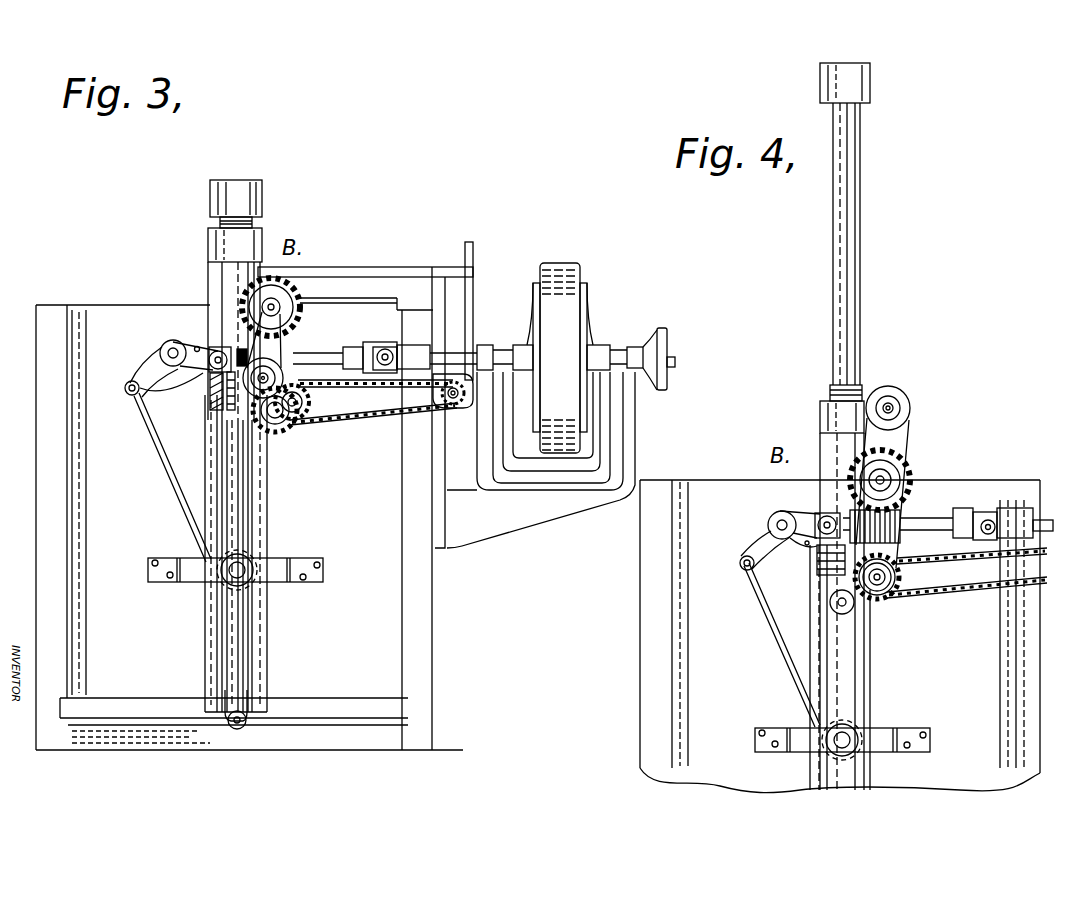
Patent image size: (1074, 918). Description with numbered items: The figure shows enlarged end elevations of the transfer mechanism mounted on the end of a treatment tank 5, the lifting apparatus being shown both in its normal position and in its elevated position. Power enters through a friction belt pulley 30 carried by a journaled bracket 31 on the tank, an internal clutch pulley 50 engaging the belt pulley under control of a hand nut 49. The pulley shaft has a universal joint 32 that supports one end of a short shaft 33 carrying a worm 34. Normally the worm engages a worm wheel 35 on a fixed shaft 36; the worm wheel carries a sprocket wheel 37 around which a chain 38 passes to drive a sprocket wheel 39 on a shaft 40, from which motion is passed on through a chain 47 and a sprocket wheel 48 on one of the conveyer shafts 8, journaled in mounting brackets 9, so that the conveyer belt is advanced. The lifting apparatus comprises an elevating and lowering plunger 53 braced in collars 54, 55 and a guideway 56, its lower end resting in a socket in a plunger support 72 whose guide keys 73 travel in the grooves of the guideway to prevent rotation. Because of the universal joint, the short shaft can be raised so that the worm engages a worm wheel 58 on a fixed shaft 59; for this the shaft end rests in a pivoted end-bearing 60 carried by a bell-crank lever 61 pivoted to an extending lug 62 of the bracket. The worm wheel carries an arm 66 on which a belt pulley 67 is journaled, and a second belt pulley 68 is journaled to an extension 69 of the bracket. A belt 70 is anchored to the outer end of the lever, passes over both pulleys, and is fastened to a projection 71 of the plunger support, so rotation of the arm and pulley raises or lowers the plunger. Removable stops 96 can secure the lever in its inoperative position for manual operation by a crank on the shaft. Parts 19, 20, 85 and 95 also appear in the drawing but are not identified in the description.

In FIG. 3, the tank 5 is at (56, 305).
In FIG. 4, the tank 5 is at (664, 487).
In FIG. 3, the shaft 8 is at (425, 269).
In FIG. 3, the mounting bracket 9 is at (360, 308).
In FIG. 3, the guide block 19 is at (216, 402).
In FIG. 4, the drive shaft 20 is at (935, 519).
In FIG. 3, the friction belt pulley 30 is at (562, 270).
In FIG. 3, the journaled bracket 31 is at (533, 512).
In FIG. 3, the universal joint 32 is at (376, 342).
In FIG. 4, the universal joint 32 is at (995, 510).
In FIG. 3, the short shaft 33 is at (330, 357).
In FIG. 3, the worm 34 is at (318, 352).
In FIG. 4, the worm 34 is at (898, 517).
In FIG. 3, the worm wheel 35 is at (304, 404).
In FIG. 4, the worm wheel 35 is at (940, 576).
In FIG. 3, the fixed shaft 36 is at (288, 427).
In FIG. 4, the fixed shaft 36 is at (898, 597).
In FIG. 3, the sprocket wheel 37 is at (294, 416).
In FIG. 4, the sprocket wheel 37 is at (906, 571).
In FIG. 3, the chain 38 is at (378, 419).
In FIG. 4, the chain 38 is at (967, 585).
In FIG. 3, the sprocket wheel 39 is at (432, 404).
In FIG. 3, the shaft 40 is at (454, 408).
In FIG. 3, the chain 47 is at (473, 313).
In FIG. 3, the sprocket wheel 48 is at (473, 258).
In FIG. 3, the hand nut 49 is at (670, 345).
In FIG. 3, the internal clutch pulley 50 is at (590, 290).
In FIG. 3, the elevating and lowering plunger 53 is at (238, 272).
In FIG. 4, the elevating and lowering plunger 53 is at (854, 207).
In FIG. 3, the collar 54 is at (208, 240).
In FIG. 4, the collar 54 is at (820, 416).
In FIG. 3, the collar 55 is at (152, 445).
In FIG. 3, the guideway 56 is at (212, 483).
In FIG. 4, the guideway 56 is at (816, 623).
In FIG. 3, the worm wheel 58 is at (276, 303).
In FIG. 4, the worm wheel 58 is at (905, 463).
In FIG. 3, the fixed shaft 59 is at (272, 362).
In FIG. 4, the fixed shaft 59 is at (893, 478).
In FIG. 3, the pivoted end-bearing 60 is at (225, 340).
In FIG. 4, the pivoted end-bearing 60 is at (820, 511).
In FIG. 3, the bell-crank lever 61 is at (147, 370).
In FIG. 4, the bell-crank lever 61 is at (757, 543).
In FIG. 3, the extending lug 62 is at (193, 347).
In FIG. 4, the extending lug 62 is at (807, 545).
In FIG. 3, the arm 66 is at (285, 360).
In FIG. 4, the arm 66 is at (884, 443).
In FIG. 3, the belt pulley 67 is at (262, 306).
In FIG. 4, the belt pulley 67 is at (907, 410).
In FIG. 3, the belt pulley 68 is at (257, 583).
In FIG. 4, the belt pulley 68 is at (827, 752).
In FIG. 3, the extension 69 is at (217, 582).
In FIG. 3, the belt 70 is at (163, 463).
In FIG. 4, the belt 70 is at (780, 650).
In FIG. 3, the projection 71 is at (236, 729).
In FIG. 3, the plunger support 72 is at (248, 713).
In FIG. 3, the guide key 73 is at (267, 621).
In FIG. 3, the cap 85 is at (262, 194).
In FIG. 4, the cap 85 is at (869, 86).
In FIG. 3, the collar 95 is at (253, 223).
In FIG. 4, the collar 95 is at (858, 387).
In FIG. 3, the removable stop 96 is at (198, 347).
In FIG. 4, the removable stop 96 is at (779, 515).